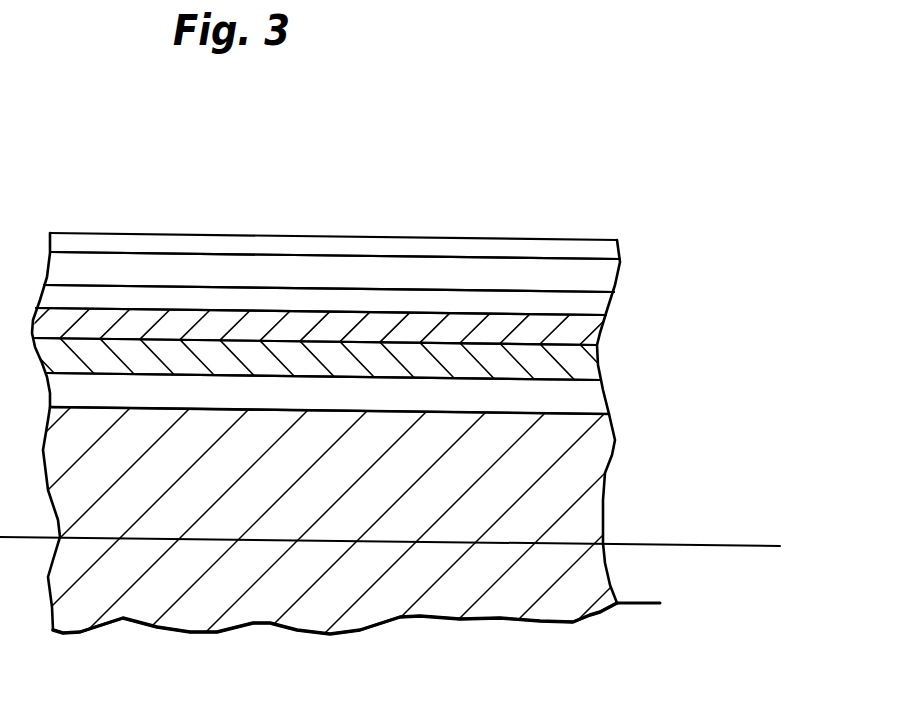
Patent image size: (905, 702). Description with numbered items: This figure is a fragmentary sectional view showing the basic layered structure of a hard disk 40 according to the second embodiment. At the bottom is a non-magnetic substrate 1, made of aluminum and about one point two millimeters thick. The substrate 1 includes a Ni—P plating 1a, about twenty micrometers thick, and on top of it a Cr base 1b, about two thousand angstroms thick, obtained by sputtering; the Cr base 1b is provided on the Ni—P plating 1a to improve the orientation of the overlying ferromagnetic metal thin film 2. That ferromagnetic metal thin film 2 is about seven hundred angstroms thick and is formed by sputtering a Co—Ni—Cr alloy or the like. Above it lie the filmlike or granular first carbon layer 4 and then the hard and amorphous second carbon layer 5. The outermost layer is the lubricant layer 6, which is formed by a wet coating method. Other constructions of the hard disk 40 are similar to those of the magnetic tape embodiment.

The hard disk 40 is at (429, 378).
The non-magnetic substrate 1 is at (590, 477).
The Ni—P plating 1a is at (600, 402).
The Cr base 1b is at (588, 365).
The ferromagnetic metal thin film 2 is at (592, 333).
The first carbon layer 4 is at (602, 302).
The second carbon layer 5 is at (608, 277).
The lubricant layer 6 is at (605, 250).